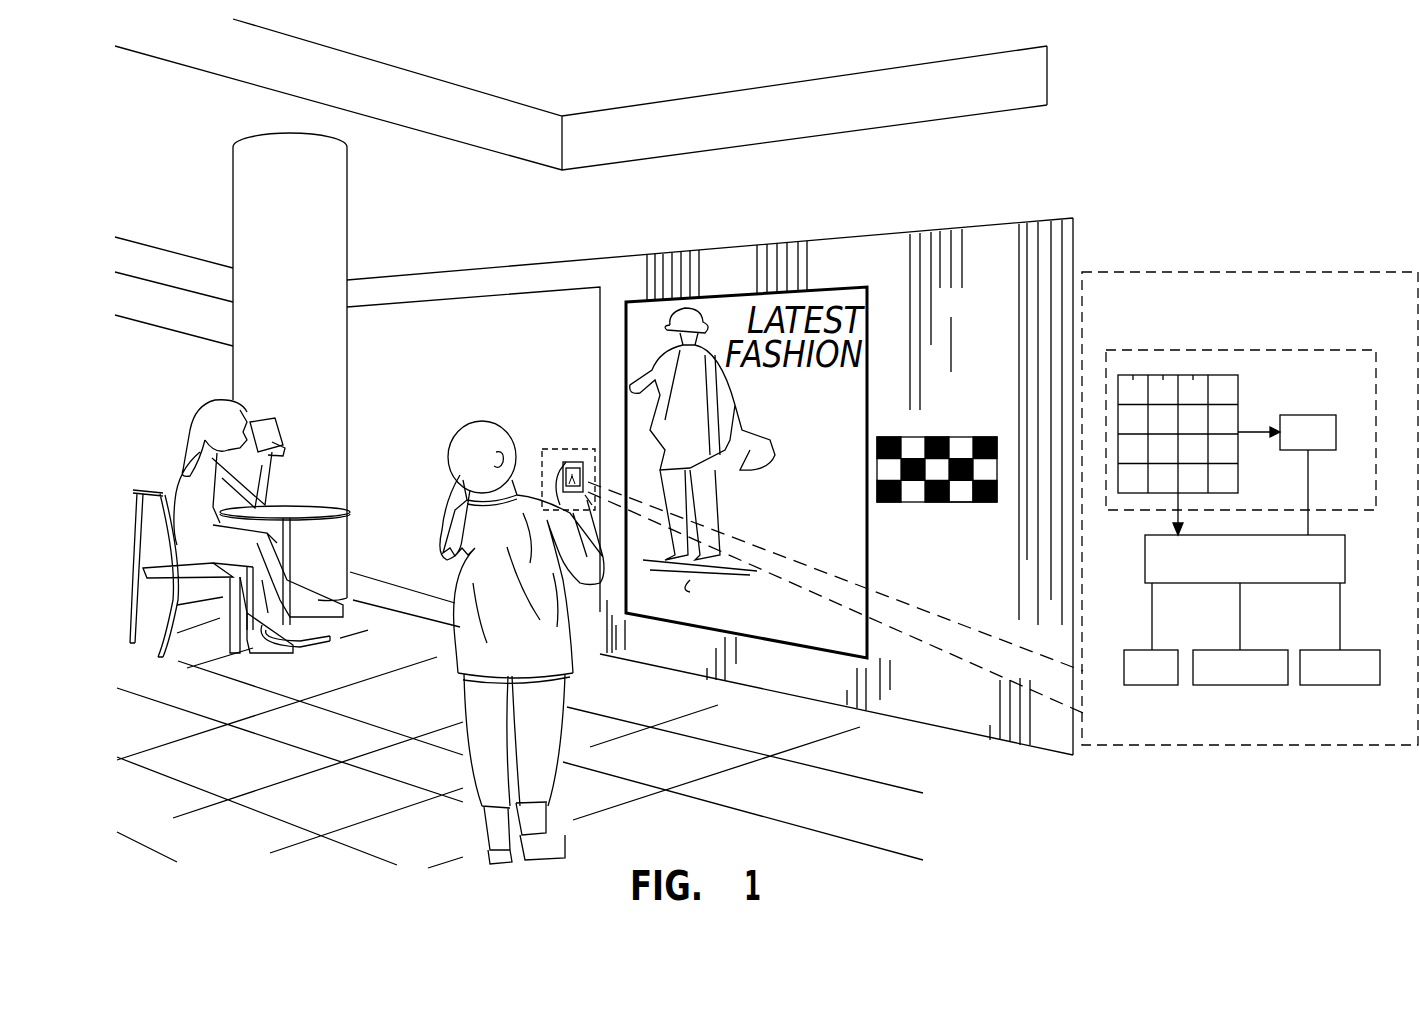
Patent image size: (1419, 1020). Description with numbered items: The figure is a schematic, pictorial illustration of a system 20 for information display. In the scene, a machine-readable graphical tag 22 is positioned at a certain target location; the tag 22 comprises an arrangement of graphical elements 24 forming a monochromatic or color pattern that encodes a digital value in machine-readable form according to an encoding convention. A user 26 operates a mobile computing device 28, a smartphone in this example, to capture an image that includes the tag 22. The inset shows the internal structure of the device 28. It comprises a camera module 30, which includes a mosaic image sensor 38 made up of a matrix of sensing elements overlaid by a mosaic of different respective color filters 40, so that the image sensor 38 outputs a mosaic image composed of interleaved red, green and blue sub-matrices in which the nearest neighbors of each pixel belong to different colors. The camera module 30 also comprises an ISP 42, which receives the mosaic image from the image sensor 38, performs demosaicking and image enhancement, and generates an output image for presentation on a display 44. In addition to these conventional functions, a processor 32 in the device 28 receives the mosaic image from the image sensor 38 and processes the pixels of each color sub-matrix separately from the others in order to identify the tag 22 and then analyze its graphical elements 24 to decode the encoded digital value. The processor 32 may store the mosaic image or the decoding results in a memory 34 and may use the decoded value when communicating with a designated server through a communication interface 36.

The system for information display 20 is at (307, 263).
The machine-readable graphical tag 22 is at (966, 437).
The graphical elements 24 is at (948, 502).
The user 26 is at (470, 450).
The mobile computing device 28 is at (577, 463).
The camera module 30 is at (1382, 418).
The processor 32 is at (1345, 560).
The memory 34 is at (1150, 686).
The communication interface 36 is at (1336, 686).
The mosaic image sensor 38 is at (1240, 378).
The color filters 40 is at (1193, 375).
The ISP 42 is at (1326, 415).
The display 44 is at (1238, 686).